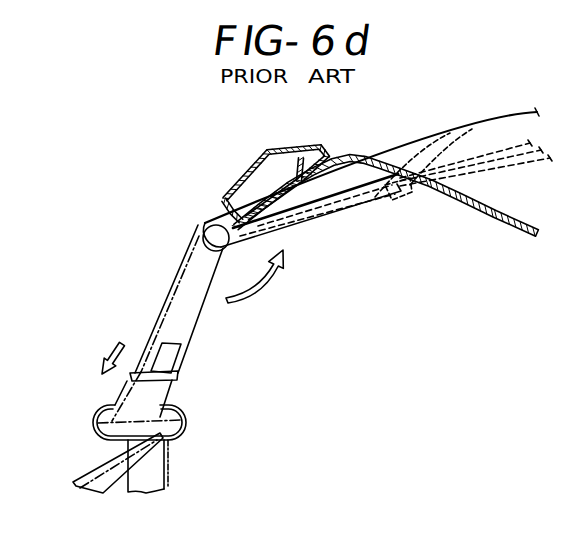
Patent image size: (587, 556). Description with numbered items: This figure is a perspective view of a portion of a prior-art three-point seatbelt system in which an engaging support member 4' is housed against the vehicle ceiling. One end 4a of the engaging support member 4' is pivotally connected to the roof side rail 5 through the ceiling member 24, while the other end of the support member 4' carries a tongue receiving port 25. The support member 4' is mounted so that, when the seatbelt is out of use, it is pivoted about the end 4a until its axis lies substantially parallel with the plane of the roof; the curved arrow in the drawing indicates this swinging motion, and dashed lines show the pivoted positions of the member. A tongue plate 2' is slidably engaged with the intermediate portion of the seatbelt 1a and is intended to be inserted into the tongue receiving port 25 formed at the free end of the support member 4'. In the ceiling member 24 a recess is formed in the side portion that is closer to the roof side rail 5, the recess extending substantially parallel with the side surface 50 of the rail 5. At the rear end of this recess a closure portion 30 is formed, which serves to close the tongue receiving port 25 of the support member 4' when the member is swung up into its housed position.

The roof side rail 5 is at (255, 183).
The side surface of the rail 50 is at (290, 180).
The ceiling member 24 is at (371, 162).
The one end of the engaging support member 4a is at (213, 225).
The engaging support member 4' is at (268, 273).
The tongue receiving port 25 is at (143, 371).
The tongue plate 2' is at (154, 422).
The intermediate portion of the seatbelt 1a is at (88, 470).
The closure portion 30 is at (378, 170).